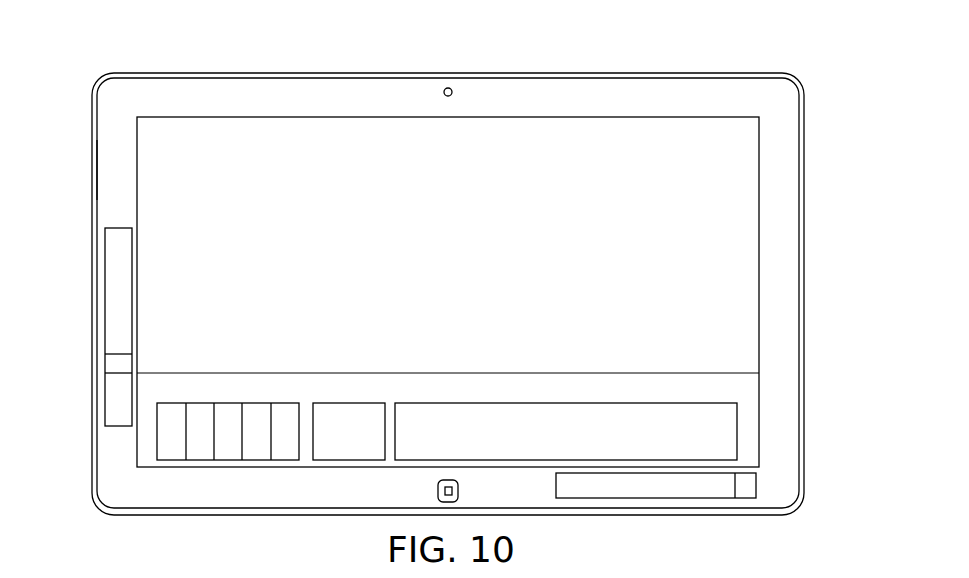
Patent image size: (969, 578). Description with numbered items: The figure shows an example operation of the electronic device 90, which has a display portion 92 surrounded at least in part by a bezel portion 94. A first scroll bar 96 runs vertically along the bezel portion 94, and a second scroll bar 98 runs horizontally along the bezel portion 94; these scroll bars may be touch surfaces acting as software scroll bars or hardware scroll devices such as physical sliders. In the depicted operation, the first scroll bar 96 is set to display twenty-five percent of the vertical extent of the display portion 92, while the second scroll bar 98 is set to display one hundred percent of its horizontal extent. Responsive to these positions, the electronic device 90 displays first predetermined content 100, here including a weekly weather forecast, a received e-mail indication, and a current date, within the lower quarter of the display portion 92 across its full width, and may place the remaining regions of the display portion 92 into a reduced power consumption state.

The electronic device 90 is at (313, 73).
The display portion 92 is at (153, 145).
The bezel portion 94 is at (100, 178).
The first scroll bar 96 is at (105, 327).
The second scroll bar 98 is at (745, 499).
The first predetermined content 100 is at (748, 438).